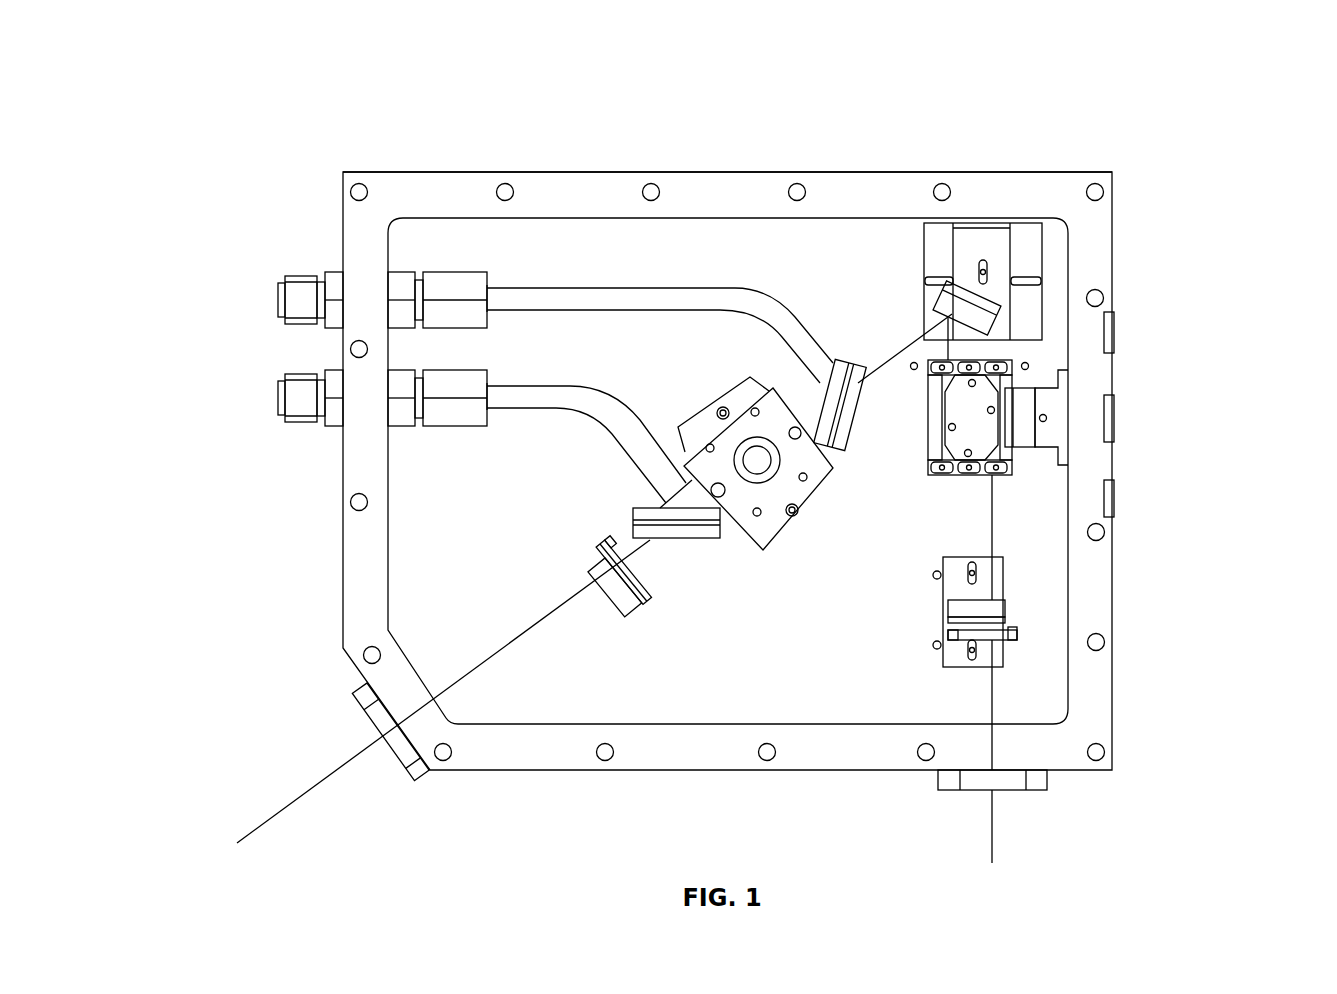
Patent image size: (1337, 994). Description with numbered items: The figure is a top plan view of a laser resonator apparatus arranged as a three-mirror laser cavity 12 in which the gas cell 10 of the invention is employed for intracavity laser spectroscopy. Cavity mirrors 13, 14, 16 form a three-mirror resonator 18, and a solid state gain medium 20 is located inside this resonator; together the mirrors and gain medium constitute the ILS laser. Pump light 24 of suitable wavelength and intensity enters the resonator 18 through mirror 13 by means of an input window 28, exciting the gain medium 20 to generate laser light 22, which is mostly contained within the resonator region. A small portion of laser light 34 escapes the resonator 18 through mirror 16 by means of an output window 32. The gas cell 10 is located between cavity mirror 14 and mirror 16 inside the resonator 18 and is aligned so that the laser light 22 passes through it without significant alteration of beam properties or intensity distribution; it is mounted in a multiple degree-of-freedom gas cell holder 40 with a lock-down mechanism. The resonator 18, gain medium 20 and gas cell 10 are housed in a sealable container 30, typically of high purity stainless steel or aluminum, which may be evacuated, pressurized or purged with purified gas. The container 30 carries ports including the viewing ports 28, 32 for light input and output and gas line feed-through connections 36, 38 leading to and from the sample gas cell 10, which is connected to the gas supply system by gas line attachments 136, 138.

The gas cell 10 is at (688, 512).
The three-mirror laser cavity 12 is at (1184, 159).
The cavity mirror 13 is at (1017, 635).
The cavity mirror 14 is at (963, 292).
The cavity mirror 16 is at (620, 613).
The three-mirror resonator 18 is at (734, 692).
The solid state gain medium 20 is at (978, 423).
The laser light 22 is at (862, 358).
The pump light 24 is at (990, 838).
The input window 28 is at (1020, 790).
The sealable container 30 is at (553, 185).
The output window 32 is at (352, 698).
The laser light output 34 is at (340, 763).
The gas line feed-through connection 36 is at (332, 427).
The gas line feed-through connection 38 is at (335, 278).
The gas cell holder 40 is at (792, 485).
The gas line attachment 136 is at (594, 408).
The gas line attachment 138 is at (757, 310).